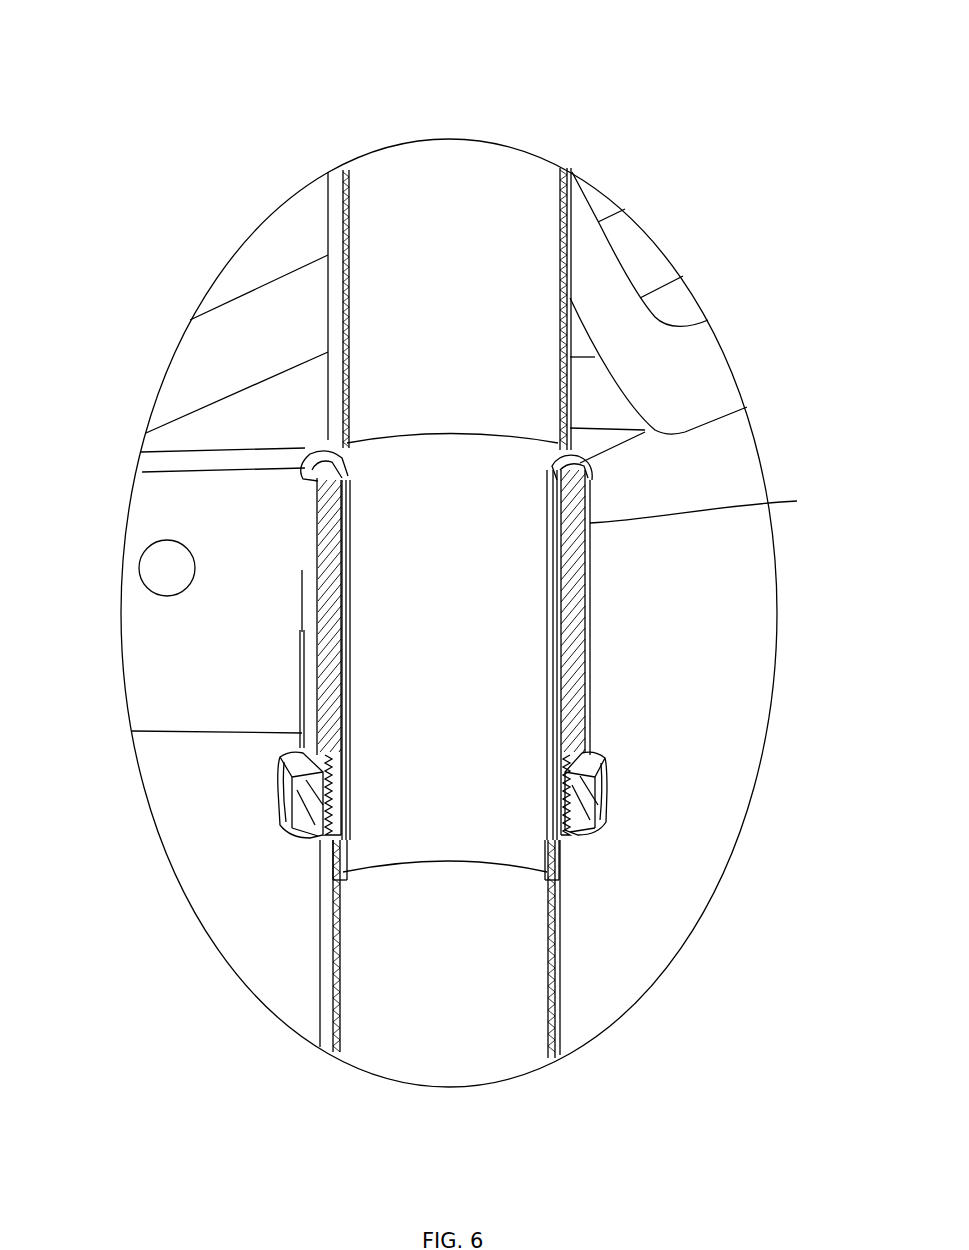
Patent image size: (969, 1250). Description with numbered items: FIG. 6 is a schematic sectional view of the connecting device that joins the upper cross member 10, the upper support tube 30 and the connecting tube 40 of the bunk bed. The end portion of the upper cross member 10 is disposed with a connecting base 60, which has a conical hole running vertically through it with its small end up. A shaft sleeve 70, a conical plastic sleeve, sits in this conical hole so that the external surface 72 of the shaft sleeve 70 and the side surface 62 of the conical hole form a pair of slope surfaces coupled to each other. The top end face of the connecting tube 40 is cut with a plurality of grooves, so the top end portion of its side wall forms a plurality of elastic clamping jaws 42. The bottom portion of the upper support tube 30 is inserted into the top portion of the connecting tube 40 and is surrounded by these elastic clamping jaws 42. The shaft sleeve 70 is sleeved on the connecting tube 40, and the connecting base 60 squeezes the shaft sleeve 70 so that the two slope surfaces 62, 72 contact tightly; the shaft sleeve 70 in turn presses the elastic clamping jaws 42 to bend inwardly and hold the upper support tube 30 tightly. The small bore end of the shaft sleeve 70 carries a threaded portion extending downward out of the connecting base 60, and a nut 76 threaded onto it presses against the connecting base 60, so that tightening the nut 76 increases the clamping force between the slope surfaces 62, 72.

The upper cross member 10 is at (180, 677).
The upper support tube 30 is at (443, 197).
The connecting tube 40 is at (453, 1028).
The connecting base 60 is at (590, 480).
The side surface of the conical hole 62 is at (590, 497).
The elastic clamping jaws 42 is at (590, 550).
The external surface of the shaft sleeve 72 is at (590, 613).
The shaft sleeve 70 is at (590, 673).
The nut 76 is at (604, 800).